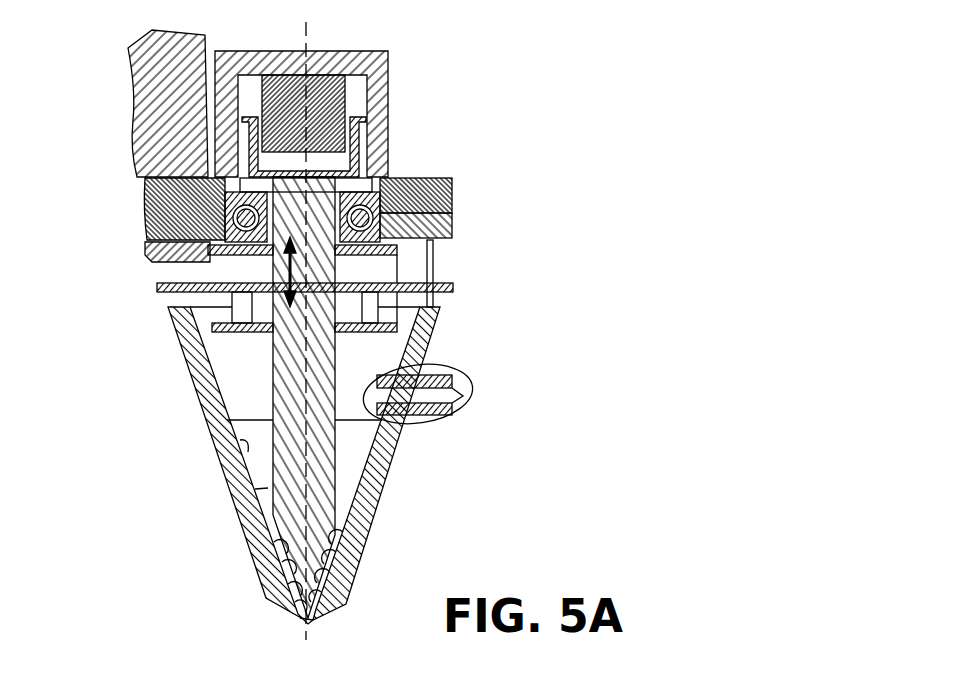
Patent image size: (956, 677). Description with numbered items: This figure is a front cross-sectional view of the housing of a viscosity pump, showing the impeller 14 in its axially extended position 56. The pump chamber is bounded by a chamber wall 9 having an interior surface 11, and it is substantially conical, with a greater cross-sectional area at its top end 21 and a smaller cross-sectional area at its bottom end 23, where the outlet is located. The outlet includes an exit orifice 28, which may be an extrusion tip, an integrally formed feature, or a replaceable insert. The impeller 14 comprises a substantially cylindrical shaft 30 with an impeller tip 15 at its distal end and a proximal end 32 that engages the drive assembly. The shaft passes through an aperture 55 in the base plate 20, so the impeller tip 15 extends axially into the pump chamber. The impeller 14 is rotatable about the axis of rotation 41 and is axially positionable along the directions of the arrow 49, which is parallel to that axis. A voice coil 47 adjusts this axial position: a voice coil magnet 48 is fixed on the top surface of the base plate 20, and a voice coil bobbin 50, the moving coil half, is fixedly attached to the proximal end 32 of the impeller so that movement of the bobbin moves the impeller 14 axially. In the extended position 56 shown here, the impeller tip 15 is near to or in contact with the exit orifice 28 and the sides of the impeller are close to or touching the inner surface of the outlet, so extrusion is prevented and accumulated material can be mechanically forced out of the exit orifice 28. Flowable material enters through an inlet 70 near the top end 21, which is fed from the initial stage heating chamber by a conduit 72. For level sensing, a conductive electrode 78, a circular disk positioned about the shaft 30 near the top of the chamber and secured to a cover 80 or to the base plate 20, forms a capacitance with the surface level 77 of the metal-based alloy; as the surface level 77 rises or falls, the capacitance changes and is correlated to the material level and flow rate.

The chamber wall 9 is at (287, 483).
The interior surface 11 is at (240, 440).
The impeller 14 is at (282, 575).
The impeller tip 15 is at (292, 590).
The base plate 20 is at (425, 228).
The top end 21 is at (407, 318).
The bottom end 23 is at (318, 626).
The exit orifice 28 is at (304, 622).
The shaft 30 is at (255, 489).
The proximal end 32 is at (395, 212).
The axis of rotation 41 is at (306, 30).
The voice coil 47 is at (462, 120).
The voice coil magnet 48 is at (322, 86).
The arrow 49 is at (278, 277).
The voice coil bobbin 50 is at (352, 140).
The aperture 55 is at (228, 176).
The extended position 56 is at (422, 527).
The inlet 70 is at (372, 374).
The conduit 72 is at (432, 415).
The surface level 77 is at (258, 421).
The electrode 78 is at (205, 330).
The cover 80 is at (157, 287).